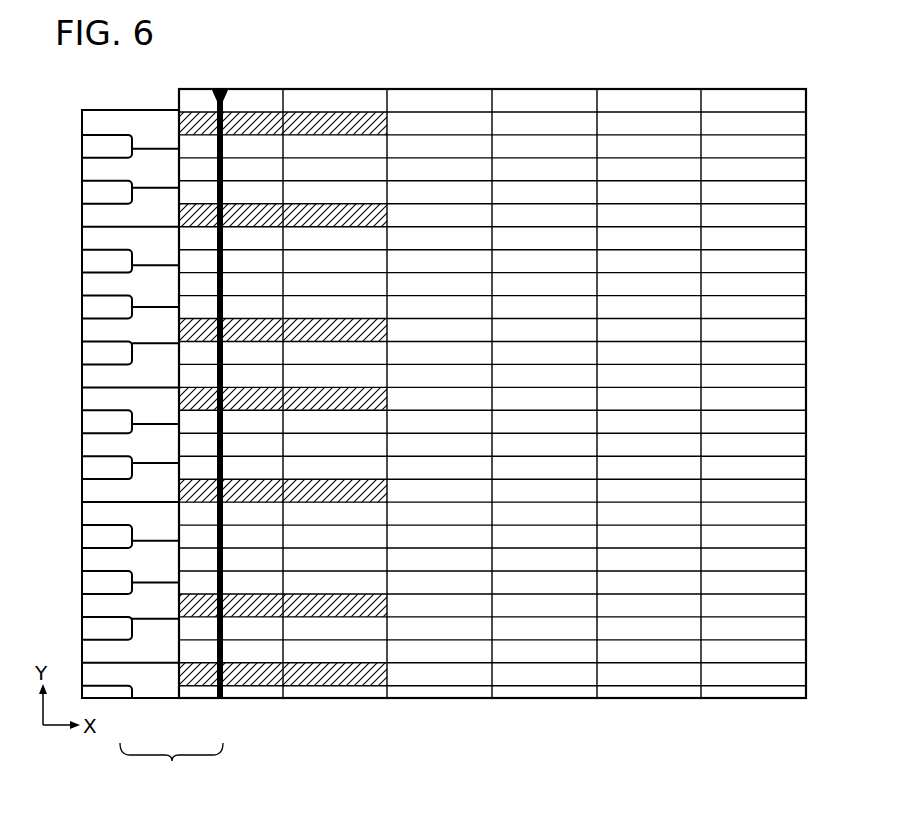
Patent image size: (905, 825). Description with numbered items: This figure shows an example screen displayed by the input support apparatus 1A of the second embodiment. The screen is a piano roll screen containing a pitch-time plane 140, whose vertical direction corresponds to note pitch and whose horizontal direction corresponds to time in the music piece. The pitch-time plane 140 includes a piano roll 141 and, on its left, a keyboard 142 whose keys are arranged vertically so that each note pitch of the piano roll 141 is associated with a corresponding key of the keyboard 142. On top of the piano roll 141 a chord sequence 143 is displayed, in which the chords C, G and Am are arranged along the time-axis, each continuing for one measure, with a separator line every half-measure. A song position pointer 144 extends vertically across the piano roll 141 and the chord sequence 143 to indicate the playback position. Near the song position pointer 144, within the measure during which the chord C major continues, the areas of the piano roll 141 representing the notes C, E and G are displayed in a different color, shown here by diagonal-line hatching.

The input support apparatus 1A is at (550, 83).
The pitch-time plane 140 is at (171, 766).
The piano roll 141 is at (200, 699).
The keyboard 142 is at (146, 699).
The chord sequence 143 is at (268, 89).
The song position pointer 144 is at (223, 102).